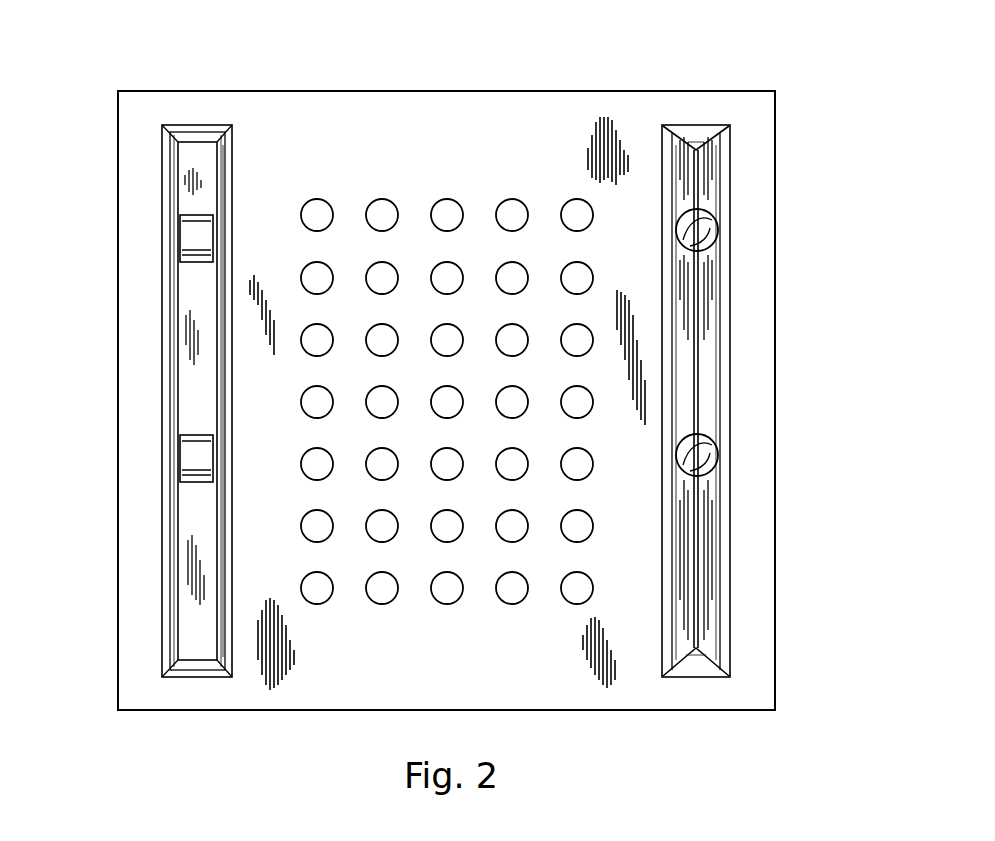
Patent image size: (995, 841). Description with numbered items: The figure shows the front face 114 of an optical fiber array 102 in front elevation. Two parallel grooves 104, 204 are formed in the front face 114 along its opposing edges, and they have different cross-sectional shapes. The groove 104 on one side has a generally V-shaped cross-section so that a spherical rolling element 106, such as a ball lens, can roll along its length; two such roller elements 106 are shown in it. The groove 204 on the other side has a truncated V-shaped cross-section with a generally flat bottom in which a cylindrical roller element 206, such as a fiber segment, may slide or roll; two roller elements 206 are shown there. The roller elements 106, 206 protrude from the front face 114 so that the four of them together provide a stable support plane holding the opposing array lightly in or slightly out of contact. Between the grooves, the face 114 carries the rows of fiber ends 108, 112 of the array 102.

The array 102 is at (630, 68).
The groove 104 is at (725, 164).
The spherical rolling element 106 is at (708, 214).
The fiber end 108 is at (462, 210).
The fiber end 112 is at (316, 210).
The front face 114 is at (481, 672).
The groove 204 is at (188, 165).
The cylindrical roller element 206 is at (180, 223).